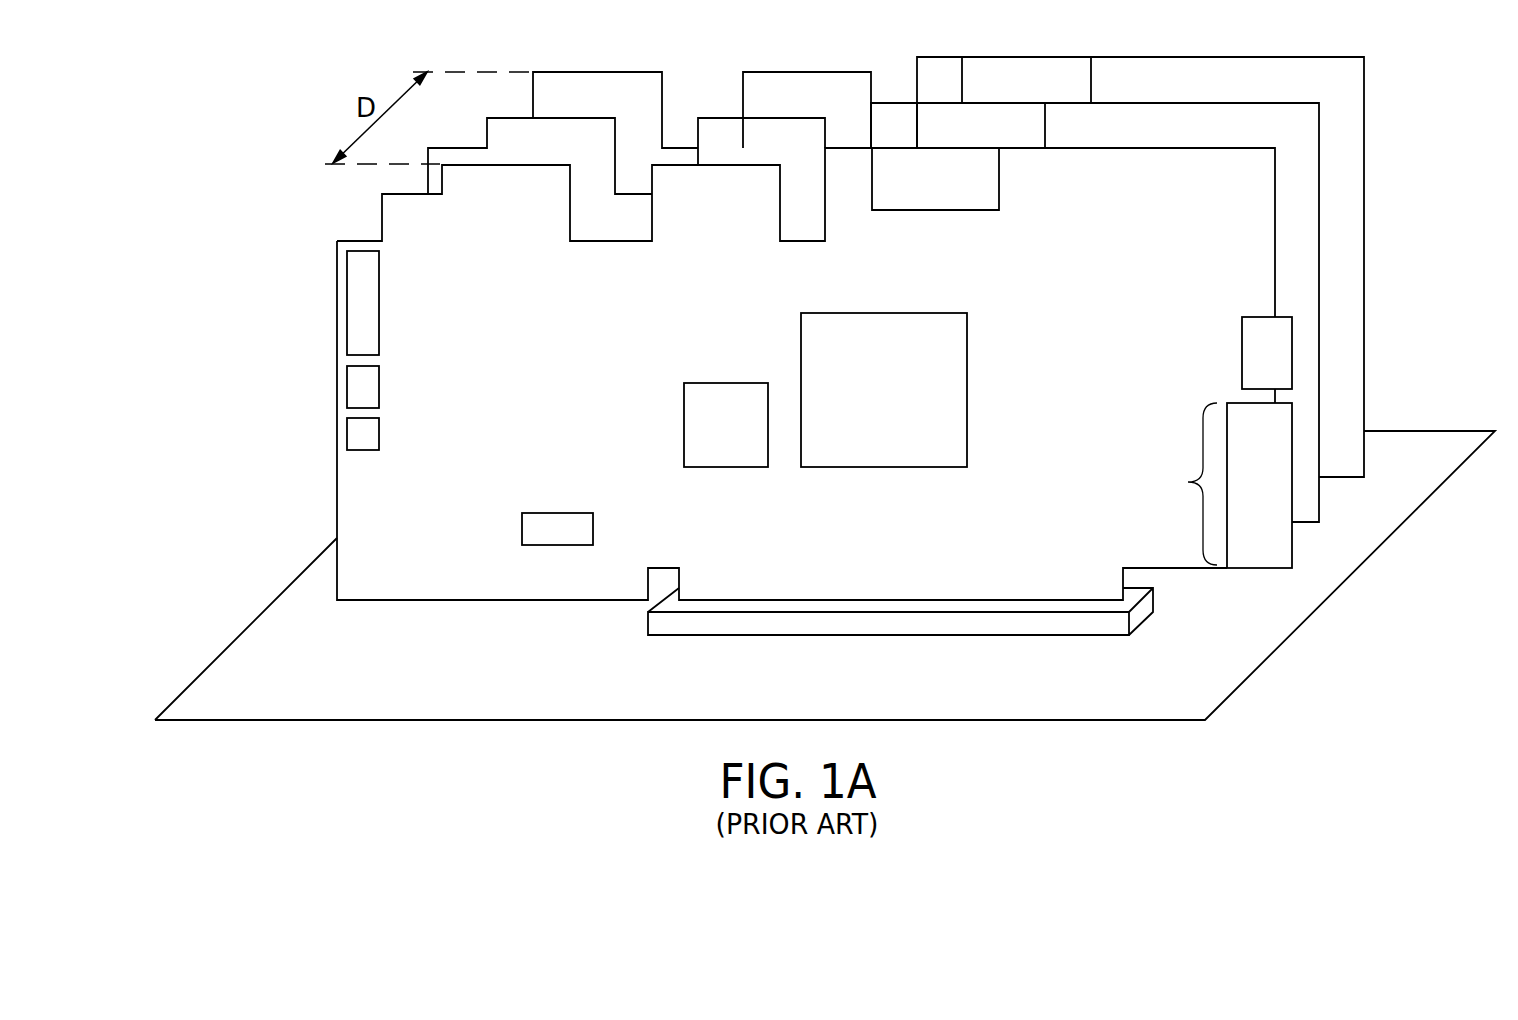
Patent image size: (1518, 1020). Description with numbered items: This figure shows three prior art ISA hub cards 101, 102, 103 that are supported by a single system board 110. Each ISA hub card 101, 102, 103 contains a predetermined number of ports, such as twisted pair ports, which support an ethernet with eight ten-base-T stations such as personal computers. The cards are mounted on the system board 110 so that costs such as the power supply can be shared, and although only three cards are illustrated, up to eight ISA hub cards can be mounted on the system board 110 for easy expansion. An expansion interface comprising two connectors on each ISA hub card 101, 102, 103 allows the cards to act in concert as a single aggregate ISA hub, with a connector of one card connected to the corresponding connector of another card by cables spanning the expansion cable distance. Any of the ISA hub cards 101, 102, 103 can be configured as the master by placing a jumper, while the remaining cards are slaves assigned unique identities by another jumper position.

The ISA hub card 101 is at (1206, 187).
The ISA hub card 102 is at (1297, 142).
The ISA hub card 103 is at (1297, 95).
The system board 110 is at (1436, 469).